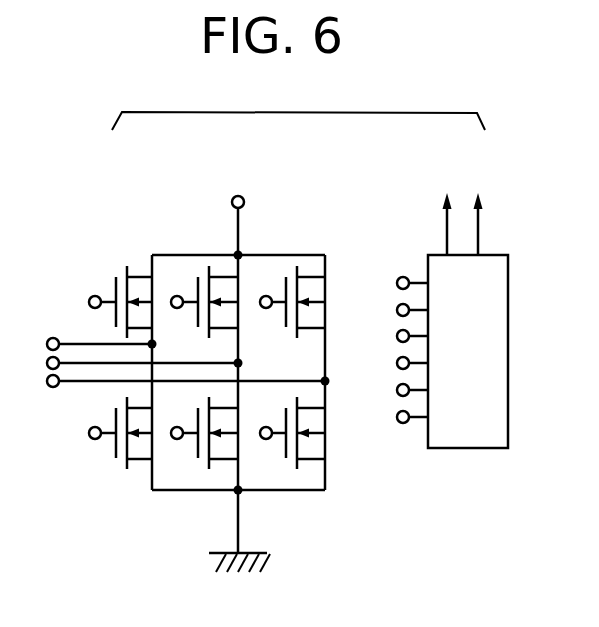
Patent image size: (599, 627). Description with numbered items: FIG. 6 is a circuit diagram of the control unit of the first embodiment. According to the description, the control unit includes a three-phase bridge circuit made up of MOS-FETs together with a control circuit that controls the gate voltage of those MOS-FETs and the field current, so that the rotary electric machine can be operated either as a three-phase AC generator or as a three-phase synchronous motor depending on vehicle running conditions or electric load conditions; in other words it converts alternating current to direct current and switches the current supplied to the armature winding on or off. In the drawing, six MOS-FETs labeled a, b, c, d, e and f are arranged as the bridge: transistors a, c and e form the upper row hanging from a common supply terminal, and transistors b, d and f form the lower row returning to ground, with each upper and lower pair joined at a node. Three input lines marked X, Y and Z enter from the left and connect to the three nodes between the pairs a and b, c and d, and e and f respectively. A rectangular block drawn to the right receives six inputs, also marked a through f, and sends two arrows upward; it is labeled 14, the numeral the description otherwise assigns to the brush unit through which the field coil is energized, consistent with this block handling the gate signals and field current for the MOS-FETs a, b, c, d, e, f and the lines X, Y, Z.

The brush unit 14 is at (481, 170).
The transistor a is at (120, 297).
The transistor b is at (120, 431).
The transistor c is at (204, 297).
The transistor d is at (204, 431).
The transistor e is at (292, 297).
The transistor f is at (292, 431).
The input X is at (88, 339).
The input Y is at (130, 360).
The input Z is at (175, 385).